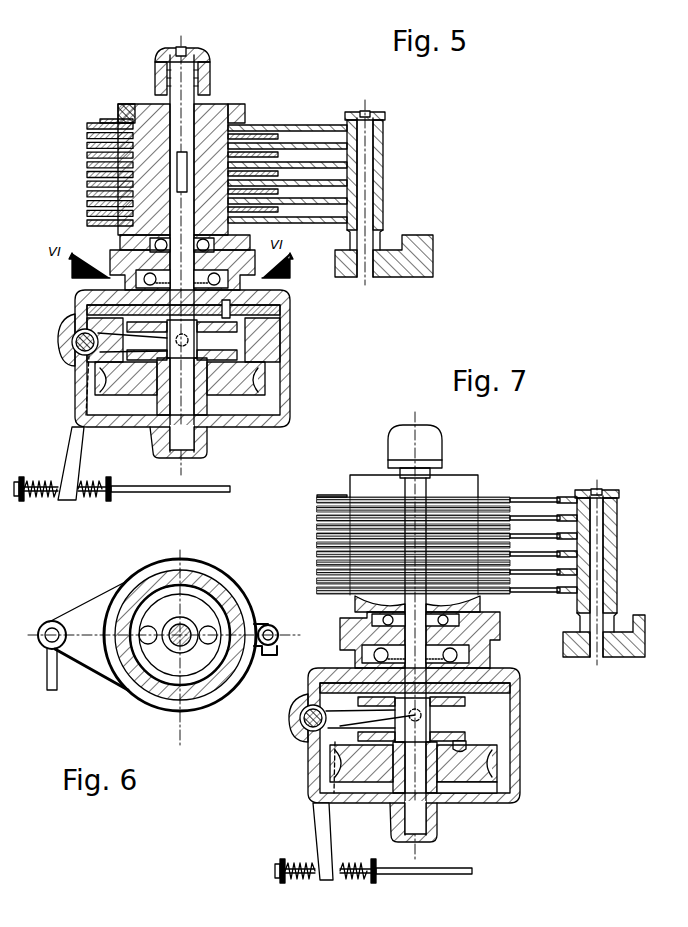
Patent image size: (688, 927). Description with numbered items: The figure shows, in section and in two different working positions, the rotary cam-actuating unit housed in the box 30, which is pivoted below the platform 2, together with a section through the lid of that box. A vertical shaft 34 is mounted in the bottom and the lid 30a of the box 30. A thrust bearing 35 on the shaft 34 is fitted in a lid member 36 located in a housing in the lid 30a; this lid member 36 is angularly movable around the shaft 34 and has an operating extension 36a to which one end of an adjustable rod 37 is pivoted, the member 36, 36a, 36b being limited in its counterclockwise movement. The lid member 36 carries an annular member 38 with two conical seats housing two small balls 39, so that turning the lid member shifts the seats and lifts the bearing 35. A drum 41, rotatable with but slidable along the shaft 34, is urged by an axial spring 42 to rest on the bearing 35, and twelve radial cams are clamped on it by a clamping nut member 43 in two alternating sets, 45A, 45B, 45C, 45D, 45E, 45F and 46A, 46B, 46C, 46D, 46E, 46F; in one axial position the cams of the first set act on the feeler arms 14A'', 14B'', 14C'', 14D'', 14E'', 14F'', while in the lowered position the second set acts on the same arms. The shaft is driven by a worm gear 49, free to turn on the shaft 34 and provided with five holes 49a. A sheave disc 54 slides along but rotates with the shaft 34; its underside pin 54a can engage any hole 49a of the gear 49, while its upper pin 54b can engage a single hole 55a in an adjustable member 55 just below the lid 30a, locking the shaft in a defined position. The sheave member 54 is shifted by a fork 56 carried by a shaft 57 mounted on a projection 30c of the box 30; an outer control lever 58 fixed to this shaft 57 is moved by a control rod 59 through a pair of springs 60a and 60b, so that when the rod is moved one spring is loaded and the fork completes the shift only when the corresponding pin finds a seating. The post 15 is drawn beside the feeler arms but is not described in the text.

In FIG. 5, the platform 2 is at (413, 246).
In FIG. 7, the platform 2 is at (632, 656).
In FIG. 5, the stationary post 15 is at (372, 130).
In FIG. 7, the stationary post 15 is at (600, 505).
In FIG. 5, the feeler arm 14A'' is at (331, 200).
In FIG. 7, the feeler arm 14A'' is at (550, 606).
In FIG. 5, the feeler arm 14B'' is at (287, 230).
In FIG. 7, the feeler arm 14B'' is at (543, 607).
In FIG. 5, the feeler arm 14C'' is at (287, 207).
In FIG. 7, the feeler arm 14C'' is at (539, 588).
In FIG. 5, the feeler arm 14D'' is at (287, 134).
In FIG. 7, the feeler arm 14D'' is at (551, 496).
In FIG. 5, the feeler arm 14E'' is at (291, 118).
In FIG. 7, the feeler arm 14E'' is at (543, 488).
In FIG. 5, the feeler arm 14F'' is at (287, 108).
In FIG. 7, the feeler arm 14F'' is at (539, 486).
In FIG. 5, the box 30 is at (247, 428).
In FIG. 7, the box 30 is at (522, 757).
In FIG. 5, the lid 30a is at (292, 294).
In FIG. 6, the lid 30a is at (228, 688).
In FIG. 7, the lid 30a is at (522, 674).
In FIG. 5, the projection 30c is at (62, 356).
In FIG. 7, the projection 30c is at (300, 743).
In FIG. 5, the vertical shaft 34 is at (164, 100).
In FIG. 6, the vertical shaft 34 is at (190, 652).
In FIG. 7, the vertical shaft 34 is at (430, 830).
In FIG. 5, the thrust bearing 35 is at (172, 232).
In FIG. 7, the thrust bearing 35 is at (480, 620).
In FIG. 5, the lid member 36 is at (112, 258).
In FIG. 6, the lid member 36 is at (168, 713).
In FIG. 7, the lid member 36 is at (342, 624).
In FIG. 6, the operating extension 36a is at (87, 604).
In FIG. 6, the lid member portion 36b is at (270, 650).
In FIG. 6, the adjustable rod 37 is at (60, 677).
In FIG. 5, the annular member 38 is at (128, 282).
In FIG. 7, the annular member 38 is at (478, 650).
In FIG. 5, the small balls 39 is at (245, 270).
In FIG. 7, the small balls 39 is at (362, 652).
In FIG. 5, the drum 41 is at (220, 108).
In FIG. 5, the axial spring 42 is at (200, 57).
In FIG. 7, the axial spring 42 is at (415, 451).
In FIG. 5, the clamping nut member 43 is at (241, 105).
In FIG. 7, the clamping nut member 43 is at (458, 474).
In FIG. 5, the cam 45A is at (87, 223).
In FIG. 7, the cam 45A is at (335, 596).
In FIG. 5, the cam 45B is at (87, 203).
In FIG. 7, the cam 45B is at (317, 572).
In FIG. 5, the cam 45C is at (87, 184).
In FIG. 7, the cam 45C is at (317, 554).
In FIG. 5, the cam 45D is at (87, 164).
In FIG. 7, the cam 45D is at (317, 536).
In FIG. 5, the cam 45E is at (87, 145).
In FIG. 7, the cam 45E is at (317, 518).
In FIG. 5, the cam 45F is at (87, 126).
In FIG. 7, the cam 45F is at (317, 500).
In FIG. 5, the cam 46A is at (87, 213).
In FIG. 7, the cam 46A is at (317, 581).
In FIG. 5, the cam 46B is at (87, 193).
In FIG. 7, the cam 46B is at (317, 563).
In FIG. 5, the cam 46C is at (87, 174).
In FIG. 7, the cam 46C is at (317, 545).
In FIG. 5, the cam 46D is at (87, 155).
In FIG. 7, the cam 46D is at (317, 527).
In FIG. 5, the cam 46E is at (87, 136).
In FIG. 7, the cam 46E is at (317, 509).
In FIG. 5, the cam 46F is at (92, 118).
In FIG. 7, the cam 46F is at (317, 497).
In FIG. 5, the worm gear 49 is at (180, 386).
In FIG. 7, the worm gear 49 is at (482, 772).
In FIG. 7, the holes 49a is at (413, 769).
In FIG. 7, the sheave disc 54 is at (452, 721).
In FIG. 7, the pin 54a is at (466, 745).
In FIG. 5, the pin 54b is at (225, 328).
In FIG. 5, the adjustable member 55 is at (282, 320).
In FIG. 5, the single hole 55a is at (236, 320).
In FIG. 5, the fork 56 is at (105, 340).
In FIG. 7, the fork 56 is at (341, 720).
In FIG. 7, the shaft 57 is at (301, 711).
In FIG. 5, the outer control lever 58 is at (84, 452).
In FIG. 7, the outer control lever 58 is at (316, 831).
In FIG. 5, the control rod 59 is at (160, 493).
In FIG. 7, the control rod 59 is at (425, 875).
In FIG. 5, the spring 60a is at (93, 501).
In FIG. 7, the spring 60a is at (362, 880).
In FIG. 5, the spring 60b is at (42, 476).
In FIG. 7, the spring 60b is at (300, 880).